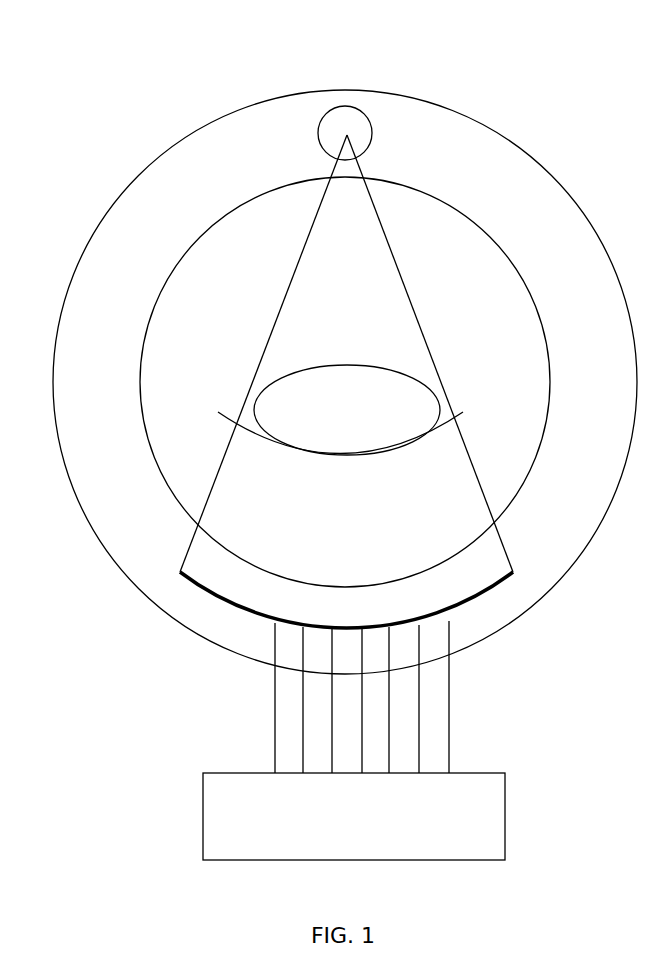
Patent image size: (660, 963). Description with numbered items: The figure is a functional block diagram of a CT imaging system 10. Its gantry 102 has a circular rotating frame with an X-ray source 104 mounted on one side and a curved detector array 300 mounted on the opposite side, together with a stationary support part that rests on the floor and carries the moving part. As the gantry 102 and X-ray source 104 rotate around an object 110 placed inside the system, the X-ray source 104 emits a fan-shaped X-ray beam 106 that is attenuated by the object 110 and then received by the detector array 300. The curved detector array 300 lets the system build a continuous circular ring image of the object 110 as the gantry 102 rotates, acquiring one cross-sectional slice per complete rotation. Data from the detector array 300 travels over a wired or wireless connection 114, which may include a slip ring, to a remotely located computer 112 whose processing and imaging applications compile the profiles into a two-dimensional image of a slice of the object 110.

The CT imaging system 10 is at (158, 108).
The gantry 102 is at (140, 177).
The X-ray source 104 is at (331, 108).
The X-ray beam 106 is at (400, 272).
The object 110 is at (420, 383).
The detector array 300 is at (485, 608).
The connection 114 is at (449, 735).
The computer 112 is at (505, 812).